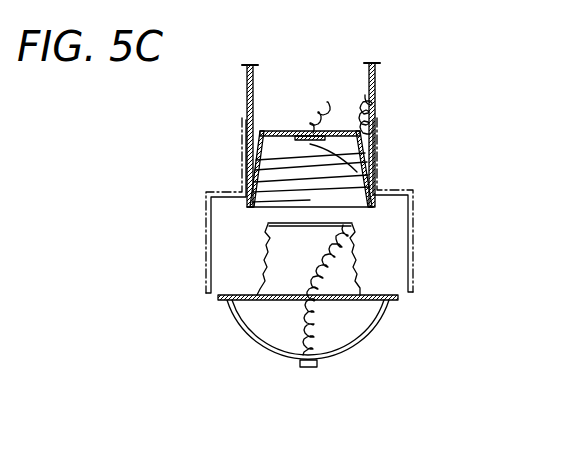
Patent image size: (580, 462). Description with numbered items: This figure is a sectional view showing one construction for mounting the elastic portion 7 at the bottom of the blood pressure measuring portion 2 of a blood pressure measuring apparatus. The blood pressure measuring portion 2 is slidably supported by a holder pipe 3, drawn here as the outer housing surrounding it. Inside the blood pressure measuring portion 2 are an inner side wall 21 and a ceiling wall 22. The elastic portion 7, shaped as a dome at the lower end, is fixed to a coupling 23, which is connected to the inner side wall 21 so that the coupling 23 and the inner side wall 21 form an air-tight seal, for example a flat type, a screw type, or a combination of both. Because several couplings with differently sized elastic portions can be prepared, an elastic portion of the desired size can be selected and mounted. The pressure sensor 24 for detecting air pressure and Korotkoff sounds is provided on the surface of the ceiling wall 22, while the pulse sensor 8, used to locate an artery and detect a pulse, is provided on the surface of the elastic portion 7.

The blood pressure measuring portion 2 is at (375, 97).
The holder pipe 3 is at (208, 211).
The elastic portion 7 is at (353, 352).
The pulse sensor 8 is at (310, 368).
The inner side wall 21 is at (310, 146).
The ceiling wall 22 is at (283, 130).
The coupling 23 is at (398, 297).
The pressure sensor 24 is at (357, 172).